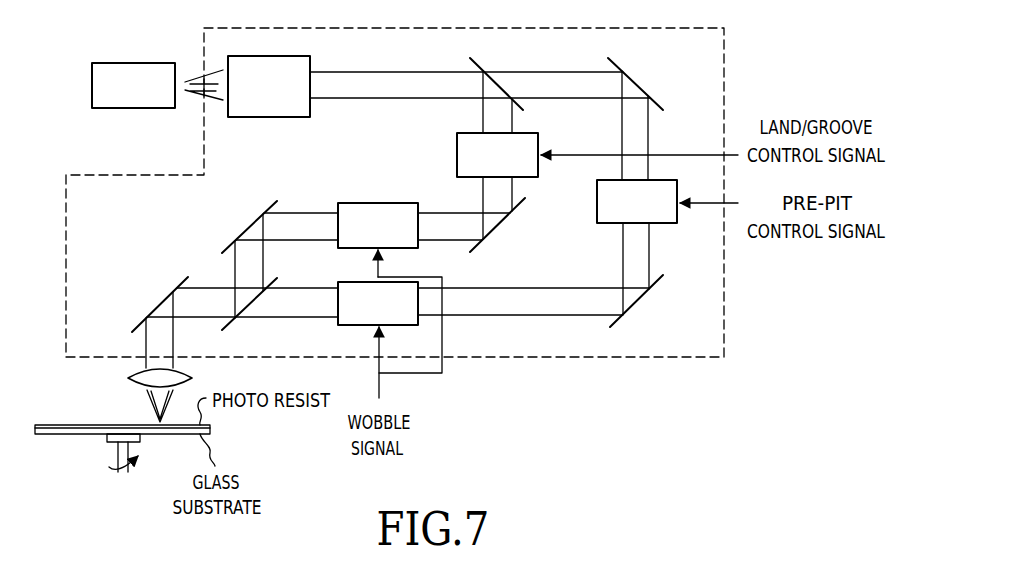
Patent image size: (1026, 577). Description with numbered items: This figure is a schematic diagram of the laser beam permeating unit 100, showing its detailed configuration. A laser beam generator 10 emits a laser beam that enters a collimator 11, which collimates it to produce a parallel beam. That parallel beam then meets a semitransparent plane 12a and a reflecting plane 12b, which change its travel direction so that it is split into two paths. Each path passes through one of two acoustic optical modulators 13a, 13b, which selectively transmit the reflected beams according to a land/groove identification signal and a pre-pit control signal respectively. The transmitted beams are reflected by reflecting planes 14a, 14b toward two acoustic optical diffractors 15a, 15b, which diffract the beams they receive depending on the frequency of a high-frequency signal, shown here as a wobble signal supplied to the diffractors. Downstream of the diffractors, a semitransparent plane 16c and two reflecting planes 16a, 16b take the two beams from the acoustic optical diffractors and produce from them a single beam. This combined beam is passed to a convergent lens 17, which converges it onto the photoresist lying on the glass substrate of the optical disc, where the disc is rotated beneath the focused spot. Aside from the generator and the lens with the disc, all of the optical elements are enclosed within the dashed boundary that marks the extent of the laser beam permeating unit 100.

The laser beam permeating unit 100 is at (613, 357).
The laser beam generator 10 is at (118, 108).
The collimator 11 is at (281, 92).
The semitransparent plane 12a is at (523, 105).
The reflecting plane 12b is at (634, 79).
The acoustic optical modulator 13a is at (457, 155).
The acoustic optical modulator 13b is at (660, 227).
The reflecting plane 14a is at (503, 225).
The reflecting plane 14b is at (643, 300).
The acoustic optical diffractor 15a is at (382, 203).
The acoustic optical diffractor 15b is at (357, 281).
The reflecting plane 16a is at (248, 226).
The reflecting plane 16b is at (158, 306).
The semitransparent plane 16c is at (233, 328).
The convergent lens 17 is at (128, 373).